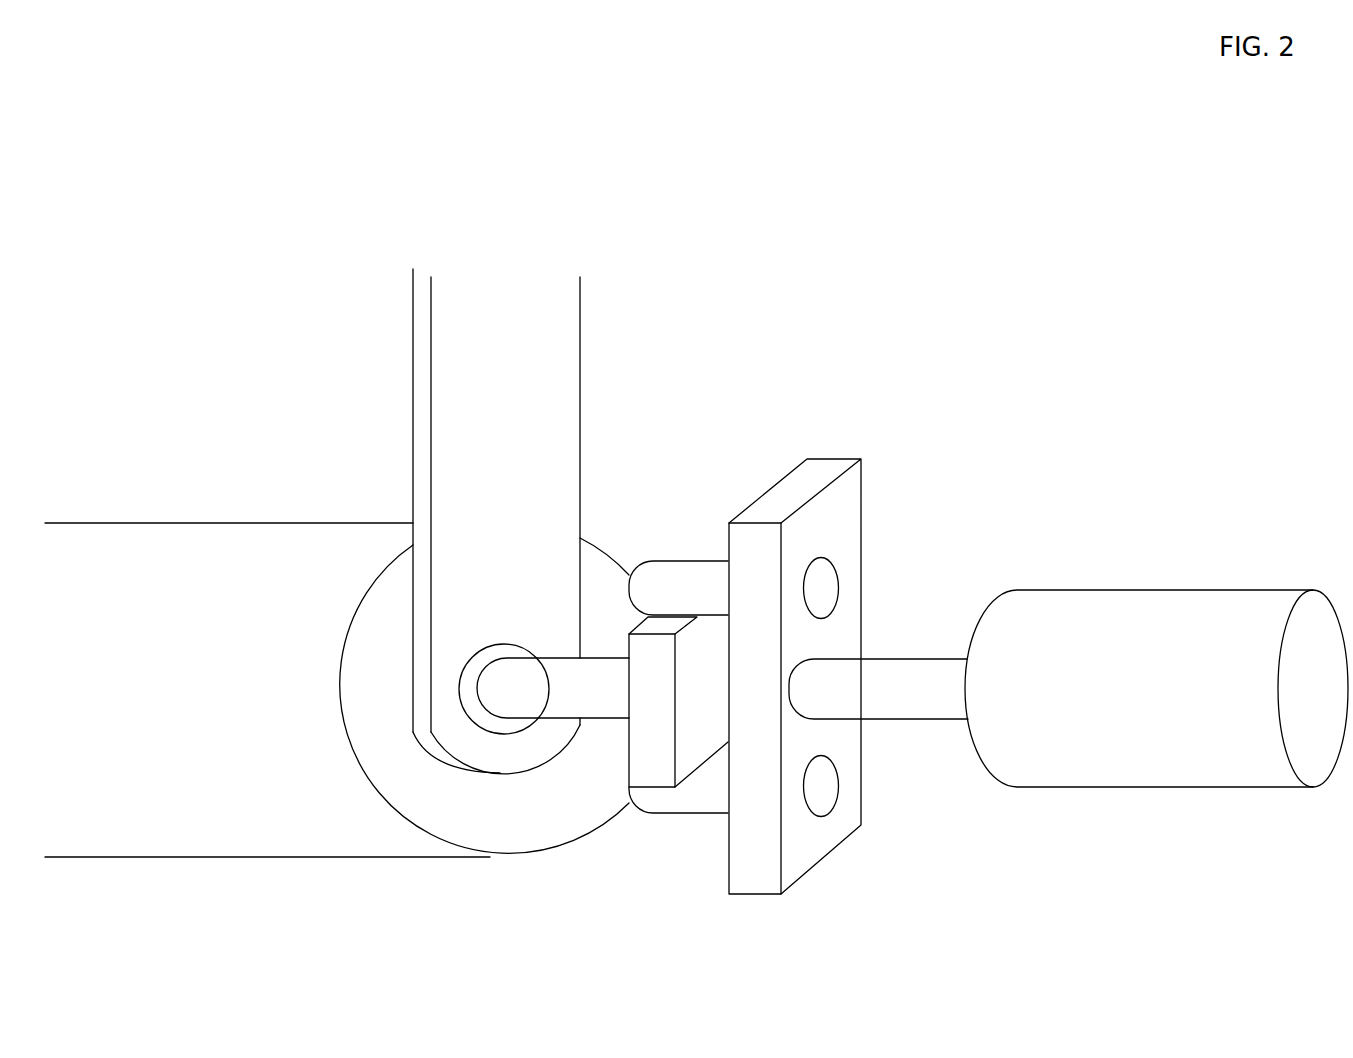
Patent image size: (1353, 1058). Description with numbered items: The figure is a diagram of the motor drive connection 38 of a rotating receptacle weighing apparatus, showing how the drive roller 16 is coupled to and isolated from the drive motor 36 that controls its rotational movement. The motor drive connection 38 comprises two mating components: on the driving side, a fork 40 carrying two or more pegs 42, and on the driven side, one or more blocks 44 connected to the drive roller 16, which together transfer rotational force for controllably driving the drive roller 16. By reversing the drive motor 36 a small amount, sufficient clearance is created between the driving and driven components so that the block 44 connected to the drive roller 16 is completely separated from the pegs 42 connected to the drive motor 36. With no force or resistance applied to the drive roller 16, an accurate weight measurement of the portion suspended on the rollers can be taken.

The drive roller 16 is at (222, 522).
The drive motor 36 is at (1128, 588).
The motor drive connection 38 is at (695, 305).
The fork 40 is at (827, 458).
The pegs 42 is at (668, 570).
The block 44 is at (635, 755).